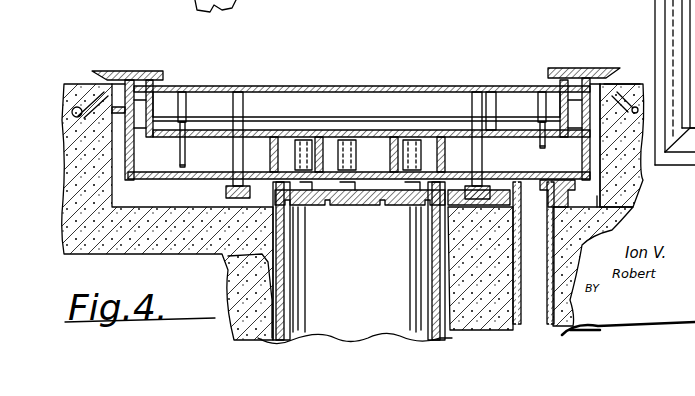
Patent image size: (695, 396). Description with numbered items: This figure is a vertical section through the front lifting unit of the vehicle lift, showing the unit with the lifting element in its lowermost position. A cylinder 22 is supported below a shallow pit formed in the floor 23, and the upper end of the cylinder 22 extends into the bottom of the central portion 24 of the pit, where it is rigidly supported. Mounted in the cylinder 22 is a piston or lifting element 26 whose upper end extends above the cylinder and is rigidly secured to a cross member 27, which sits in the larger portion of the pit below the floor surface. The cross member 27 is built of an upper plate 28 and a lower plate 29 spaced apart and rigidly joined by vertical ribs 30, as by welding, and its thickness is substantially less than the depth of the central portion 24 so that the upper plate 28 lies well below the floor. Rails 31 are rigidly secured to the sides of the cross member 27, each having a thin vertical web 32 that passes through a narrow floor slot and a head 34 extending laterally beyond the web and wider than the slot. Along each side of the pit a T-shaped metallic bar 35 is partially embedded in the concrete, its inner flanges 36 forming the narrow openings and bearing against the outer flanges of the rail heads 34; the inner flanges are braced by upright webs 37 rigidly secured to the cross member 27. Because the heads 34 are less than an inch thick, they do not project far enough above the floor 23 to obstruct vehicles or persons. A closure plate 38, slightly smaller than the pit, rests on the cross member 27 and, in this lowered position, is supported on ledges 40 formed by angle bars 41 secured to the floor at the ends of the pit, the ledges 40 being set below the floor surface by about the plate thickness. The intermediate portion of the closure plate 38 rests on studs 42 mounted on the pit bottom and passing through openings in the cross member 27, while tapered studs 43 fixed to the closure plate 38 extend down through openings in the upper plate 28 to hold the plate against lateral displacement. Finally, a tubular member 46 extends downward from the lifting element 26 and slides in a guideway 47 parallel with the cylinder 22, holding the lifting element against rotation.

The cylinder 22 is at (268, 246).
The floor 23 is at (628, 83).
The central portion of the pit 24 is at (597, 196).
The piston or lifting element 26 is at (277, 272).
The cross member 27 is at (141, 198).
The upper plate 28 is at (215, 132).
The lower plate 29 is at (222, 179).
The vertical ribs 30 is at (271, 137).
The rails 31 is at (104, 44).
The vertical web 32 is at (126, 160).
The head 34 is at (131, 82).
The metallic bar 35 is at (625, 114).
The inner flanges 36 is at (350, 123).
The upright webs 37 is at (160, 88).
The closure plate 38 is at (382, 86).
The ledges 40 is at (506, 88).
The angle bars 41 is at (494, 100).
The studs 42 is at (250, 115).
The tapered studs 43 is at (186, 136).
The tubular member 46 is at (534, 244).
The guideway 47 is at (507, 294).